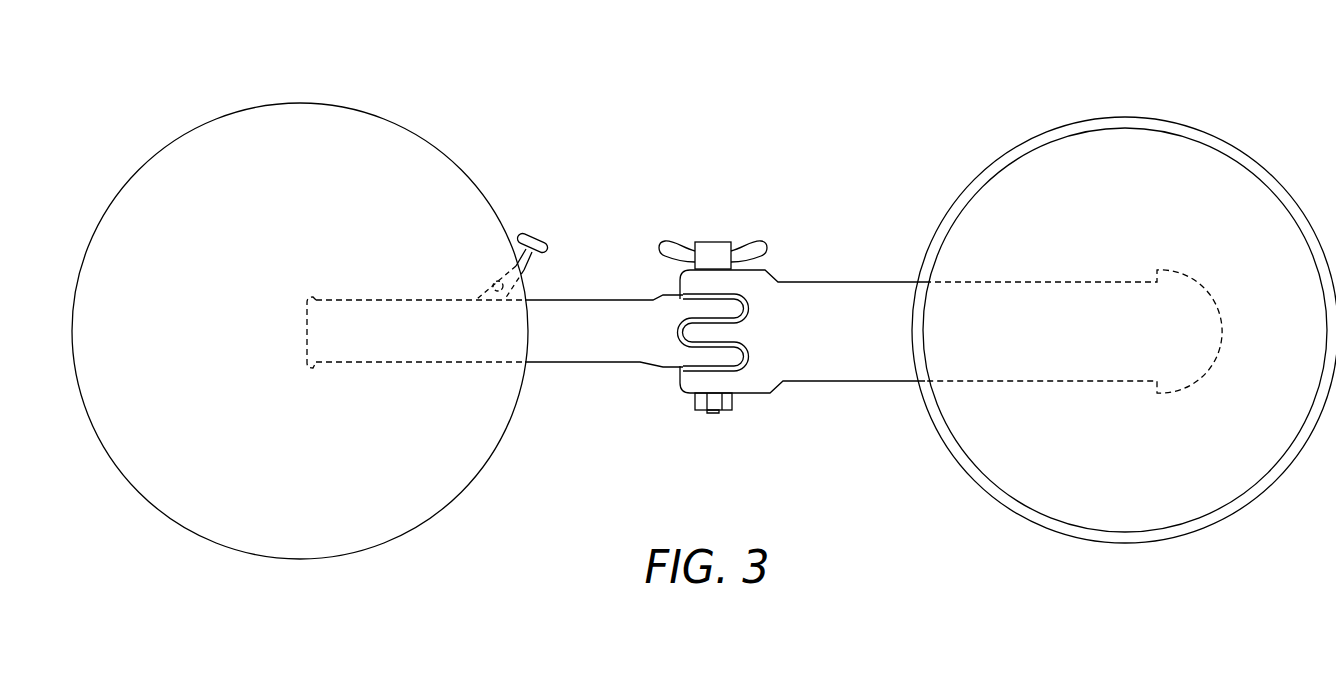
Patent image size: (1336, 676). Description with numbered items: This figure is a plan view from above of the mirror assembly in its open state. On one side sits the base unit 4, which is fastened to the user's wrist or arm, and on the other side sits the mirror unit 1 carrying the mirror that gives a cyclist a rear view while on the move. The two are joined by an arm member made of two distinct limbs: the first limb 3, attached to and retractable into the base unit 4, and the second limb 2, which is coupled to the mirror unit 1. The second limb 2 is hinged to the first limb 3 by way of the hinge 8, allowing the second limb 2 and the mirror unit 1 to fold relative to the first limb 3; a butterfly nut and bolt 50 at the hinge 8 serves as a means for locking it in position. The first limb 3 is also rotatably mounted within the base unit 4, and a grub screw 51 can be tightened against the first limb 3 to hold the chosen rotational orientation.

The mirror unit 1 is at (1123, 117).
The second limb 2 is at (851, 382).
The first limb 3 is at (582, 364).
The base unit 4 is at (300, 103).
The hinge 8 is at (714, 414).
The butterfly nut and bolt 50 is at (745, 240).
The grub screw 51 is at (540, 234).